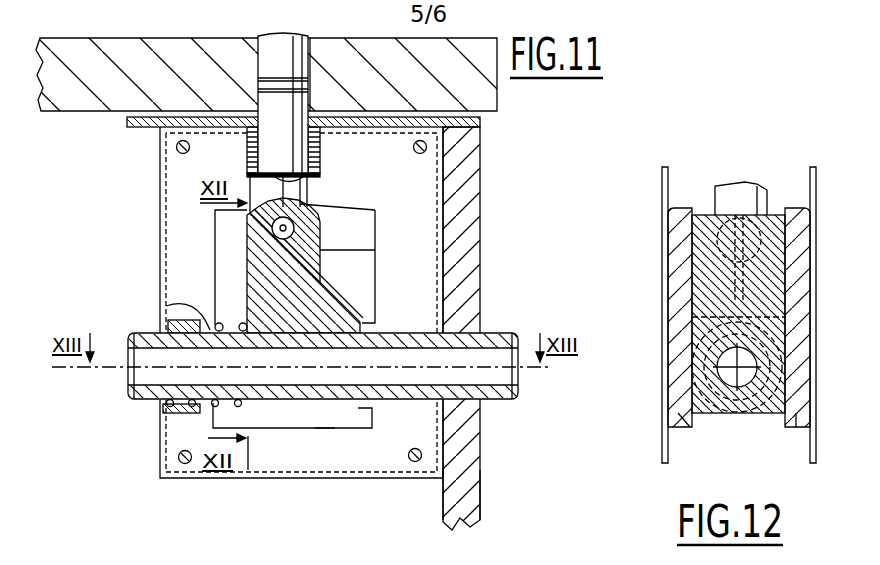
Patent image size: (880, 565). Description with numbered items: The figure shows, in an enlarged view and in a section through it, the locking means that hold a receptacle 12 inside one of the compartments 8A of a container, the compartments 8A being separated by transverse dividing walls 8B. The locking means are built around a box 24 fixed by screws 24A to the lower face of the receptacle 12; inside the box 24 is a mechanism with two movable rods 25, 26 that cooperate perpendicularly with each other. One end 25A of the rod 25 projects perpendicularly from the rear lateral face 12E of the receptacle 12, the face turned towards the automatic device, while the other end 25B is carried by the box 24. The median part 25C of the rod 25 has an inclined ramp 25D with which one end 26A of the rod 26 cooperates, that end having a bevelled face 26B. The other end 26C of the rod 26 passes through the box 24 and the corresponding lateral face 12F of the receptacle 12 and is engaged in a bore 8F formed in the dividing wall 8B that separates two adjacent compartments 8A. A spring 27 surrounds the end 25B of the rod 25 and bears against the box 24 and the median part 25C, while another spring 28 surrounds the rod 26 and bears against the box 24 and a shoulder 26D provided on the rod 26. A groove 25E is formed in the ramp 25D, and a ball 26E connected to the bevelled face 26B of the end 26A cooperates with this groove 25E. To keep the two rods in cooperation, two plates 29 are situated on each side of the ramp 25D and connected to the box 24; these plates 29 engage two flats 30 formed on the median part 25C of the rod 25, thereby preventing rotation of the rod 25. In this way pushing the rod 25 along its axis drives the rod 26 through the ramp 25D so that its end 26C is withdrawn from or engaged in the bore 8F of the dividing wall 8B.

In FIG. 11, the compartment 8A is at (87, 221).
In FIG. 11, the dividing wall 8B is at (118, 63).
In FIG. 11, the bore 8F is at (318, 82).
In FIG. 11, the receptacle 12 is at (492, 488).
In FIG. 11, the rear lateral face 12E is at (468, 255).
In FIG. 11, the lateral face 12F is at (140, 128).
In FIG. 11, the box 24 is at (157, 451).
In FIG. 12, the box 24 is at (668, 170).
In FIG. 11, the screw 24A is at (185, 466).
In FIG. 11, the rod 25 is at (365, 436).
In FIG. 12, the rod 25 is at (717, 420).
In FIG. 11, the end of rod 25 25A is at (494, 402).
In FIG. 11, the other end of rod 25 25B is at (141, 402).
In FIG. 11, the median part of rod 25 25C is at (292, 403).
In FIG. 11, the inclined ramp 25D is at (340, 297).
In FIG. 11, the groove 25E is at (217, 281).
In FIG. 11, the rod 26 is at (322, 186).
In FIG. 12, the rod 26 is at (742, 178).
In FIG. 11, the end of rod 26 26A is at (375, 210).
In FIG. 11, the bevelled face 26B is at (375, 250).
In FIG. 11, the other end of rod 26 26C is at (258, 92).
In FIG. 11, the shoulder 26D is at (314, 181).
In FIG. 11, the ball 26E is at (307, 227).
In FIG. 11, the spring 27 is at (168, 303).
In FIG. 11, the spring 28 is at (247, 149).
In FIG. 11, the plate 29 is at (326, 428).
In FIG. 12, the plate 29 is at (682, 430).
In FIG. 12, the flat 30 is at (692, 275).